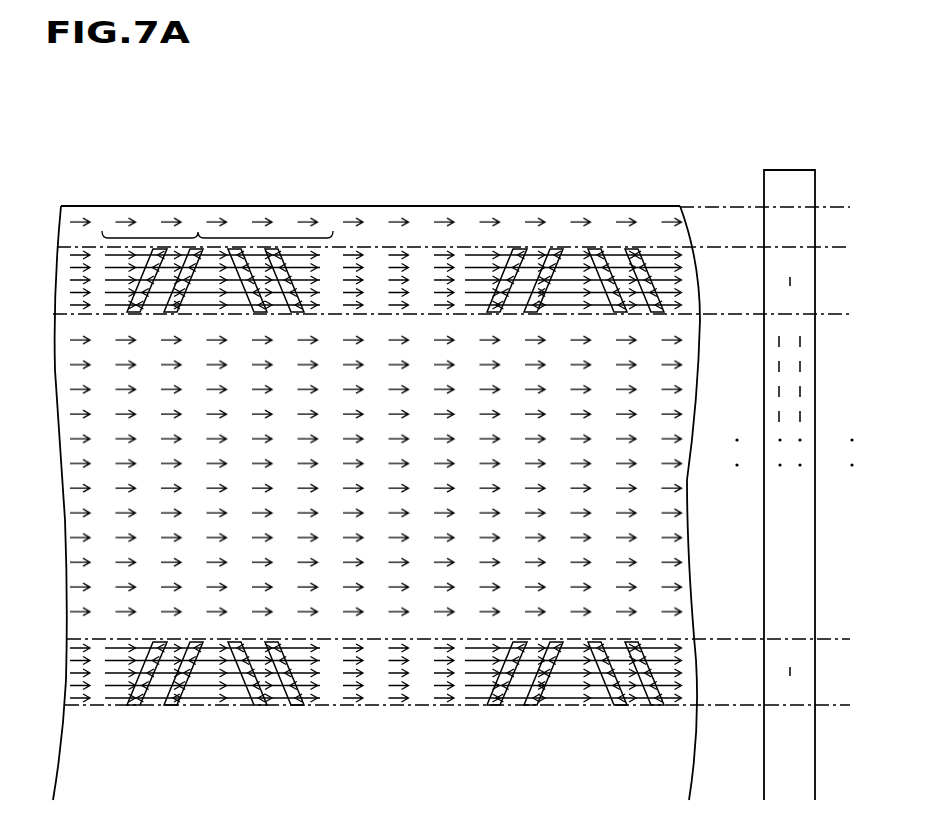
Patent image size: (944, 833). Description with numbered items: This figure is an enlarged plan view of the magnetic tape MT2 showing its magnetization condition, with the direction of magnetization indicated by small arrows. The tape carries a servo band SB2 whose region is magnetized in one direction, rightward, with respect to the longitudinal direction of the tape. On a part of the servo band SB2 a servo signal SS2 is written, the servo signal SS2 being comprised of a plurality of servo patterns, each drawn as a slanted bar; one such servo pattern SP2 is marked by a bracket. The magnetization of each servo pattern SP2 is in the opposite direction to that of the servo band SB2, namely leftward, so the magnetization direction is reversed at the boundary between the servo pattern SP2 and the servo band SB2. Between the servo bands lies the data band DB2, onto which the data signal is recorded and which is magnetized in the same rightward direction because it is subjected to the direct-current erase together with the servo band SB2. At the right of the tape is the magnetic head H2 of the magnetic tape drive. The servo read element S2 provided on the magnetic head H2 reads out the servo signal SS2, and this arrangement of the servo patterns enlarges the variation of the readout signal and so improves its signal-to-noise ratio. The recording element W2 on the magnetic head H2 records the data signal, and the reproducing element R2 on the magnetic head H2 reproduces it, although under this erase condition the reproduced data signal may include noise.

The magnetic tape MT2 is at (108, 206).
The servo pattern SP2 is at (199, 231).
The servo band SB2 is at (420, 246).
The magnetic head H2 is at (788, 170).
The servo signal SS2 is at (690, 272).
The servo read element S2 is at (791, 282).
The recording element W2 is at (779, 342).
The reproducing element R2 is at (800, 342).
The data band DB2 is at (652, 531).